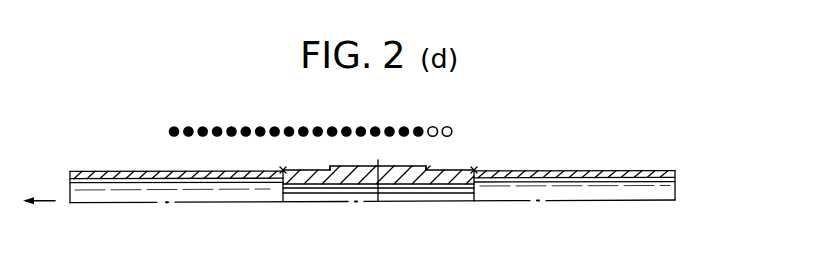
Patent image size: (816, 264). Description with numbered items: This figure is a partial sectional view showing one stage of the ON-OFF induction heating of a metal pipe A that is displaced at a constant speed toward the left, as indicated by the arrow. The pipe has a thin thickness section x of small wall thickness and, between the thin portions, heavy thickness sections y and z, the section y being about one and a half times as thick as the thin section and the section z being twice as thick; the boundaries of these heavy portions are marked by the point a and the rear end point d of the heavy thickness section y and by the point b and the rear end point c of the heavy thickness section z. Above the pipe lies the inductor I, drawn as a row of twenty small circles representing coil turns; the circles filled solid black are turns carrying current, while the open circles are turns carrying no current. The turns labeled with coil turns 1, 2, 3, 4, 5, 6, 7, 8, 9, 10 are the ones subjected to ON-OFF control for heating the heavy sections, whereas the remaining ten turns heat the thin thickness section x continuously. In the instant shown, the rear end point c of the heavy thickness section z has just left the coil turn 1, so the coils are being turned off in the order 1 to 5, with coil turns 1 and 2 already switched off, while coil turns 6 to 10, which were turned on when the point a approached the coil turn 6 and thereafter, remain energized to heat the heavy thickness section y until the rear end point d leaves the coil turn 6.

The coil turn 1 is at (447, 126).
The coil turn 2 is at (433, 126).
The coil turn 3 is at (418, 126).
The coil turn 4 is at (404, 126).
The coil turn 5 is at (390, 126).
The coil turn 6 is at (375, 126).
The coil turn 7 is at (361, 126).
The coil turn 8 is at (346, 126).
The coil turn 9 is at (332, 126).
The coil turn 10 is at (317, 126).
The metal pipe A is at (120, 157).
The inductor I is at (232, 118).
The thin thickness section x is at (211, 170).
The heavy thickness section y is at (303, 183).
The heavy thickness section z is at (378, 168).
The point on heavy thickness section y a is at (282, 170).
The point on heavy thickness section z b is at (326, 154).
The rear end point on heavy thickness section z c is at (426, 152).
The rear end point on heavy thickness section y d is at (474, 168).